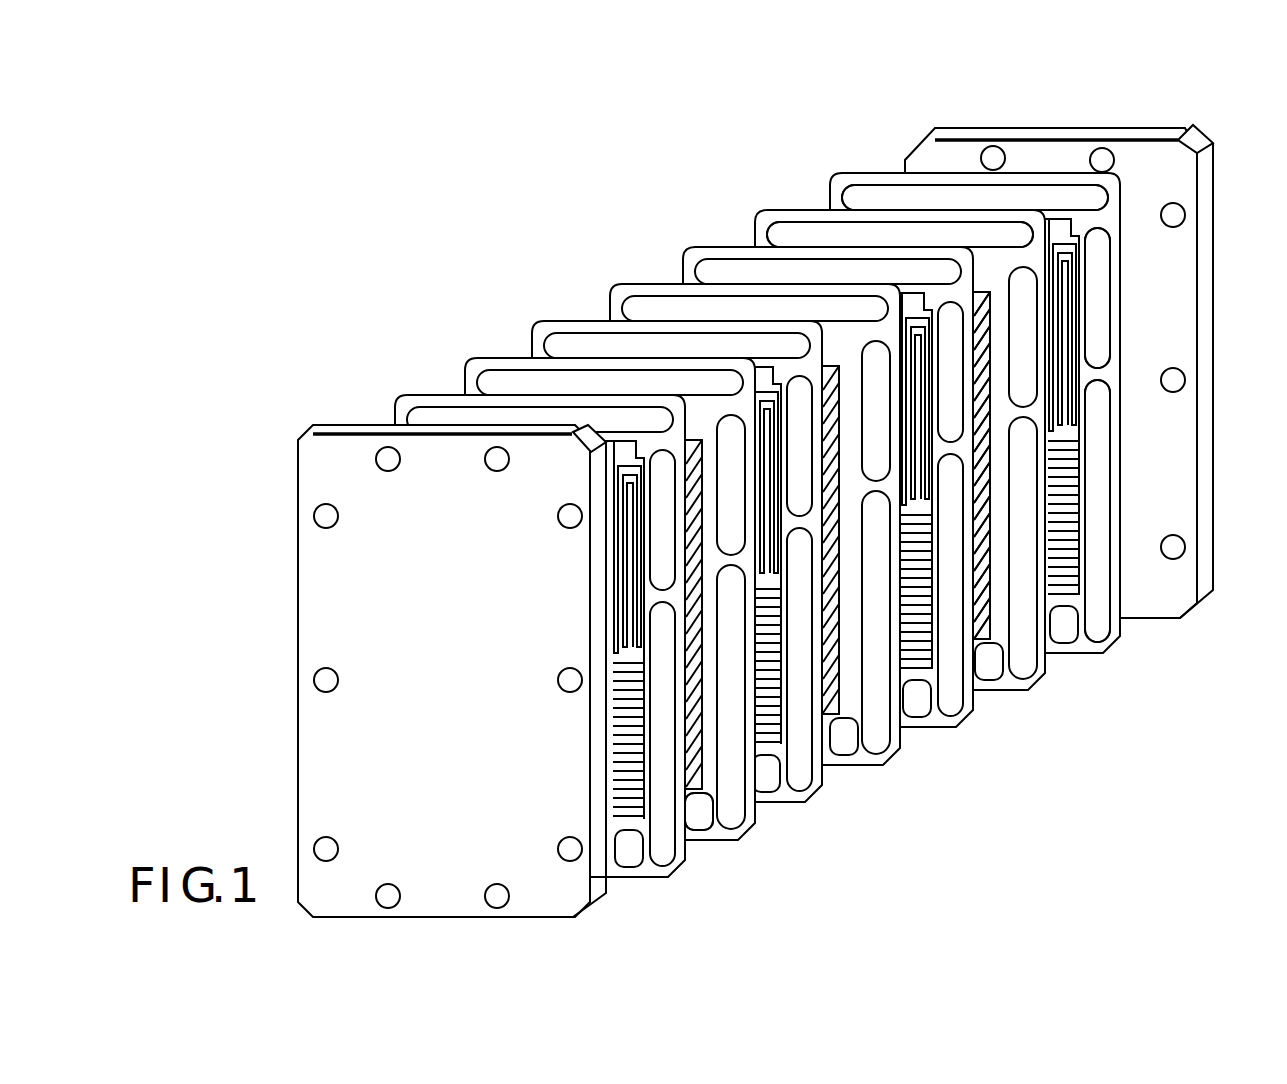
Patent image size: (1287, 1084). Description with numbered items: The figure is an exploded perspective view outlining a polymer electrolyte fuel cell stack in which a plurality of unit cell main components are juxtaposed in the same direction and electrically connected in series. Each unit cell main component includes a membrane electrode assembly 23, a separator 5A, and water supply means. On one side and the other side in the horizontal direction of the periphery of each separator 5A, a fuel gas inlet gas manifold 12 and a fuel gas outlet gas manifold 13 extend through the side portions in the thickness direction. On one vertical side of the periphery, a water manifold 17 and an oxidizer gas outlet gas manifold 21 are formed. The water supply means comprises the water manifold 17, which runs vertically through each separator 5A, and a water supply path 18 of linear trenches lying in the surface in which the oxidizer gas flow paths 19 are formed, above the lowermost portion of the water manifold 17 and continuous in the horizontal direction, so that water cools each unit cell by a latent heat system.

The separator 5A is at (403, 400).
The fuel gas inlet gas manifold 12 is at (1010, 198).
The fuel gas outlet gas manifold 13 is at (625, 848).
The water manifold 17 is at (873, 393).
The water supply path 18 is at (1057, 227).
The oxidizer gas flow paths 19 is at (1065, 482).
The oxidizer gas outlet gas manifold 21 is at (950, 553).
The membrane electrode assembly 23 is at (982, 605).